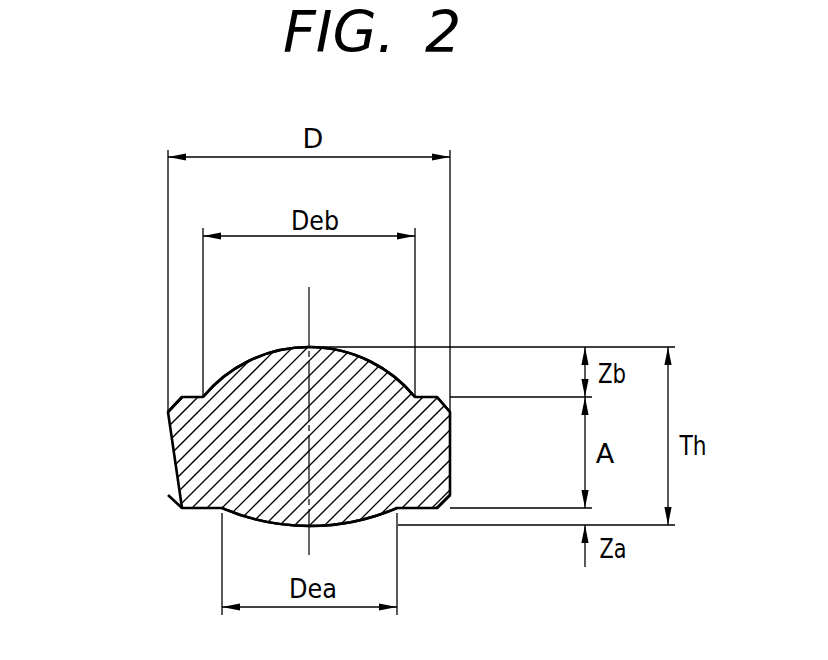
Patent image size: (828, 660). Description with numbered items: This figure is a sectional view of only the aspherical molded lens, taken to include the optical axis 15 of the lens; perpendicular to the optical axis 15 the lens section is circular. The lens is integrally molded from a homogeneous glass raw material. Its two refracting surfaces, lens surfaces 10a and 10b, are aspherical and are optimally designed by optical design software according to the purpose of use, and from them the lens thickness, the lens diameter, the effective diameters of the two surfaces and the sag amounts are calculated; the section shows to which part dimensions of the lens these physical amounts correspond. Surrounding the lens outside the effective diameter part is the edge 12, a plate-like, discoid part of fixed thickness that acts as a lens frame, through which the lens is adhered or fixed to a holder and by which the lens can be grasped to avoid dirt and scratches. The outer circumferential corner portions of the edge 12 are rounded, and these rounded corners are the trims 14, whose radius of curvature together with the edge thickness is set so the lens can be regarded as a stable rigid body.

The lens surface 10a is at (240, 368).
The lens surface 10b is at (250, 523).
The edge 12 is at (187, 457).
The trim 14 is at (158, 398).
The optical axis 15 is at (318, 309).